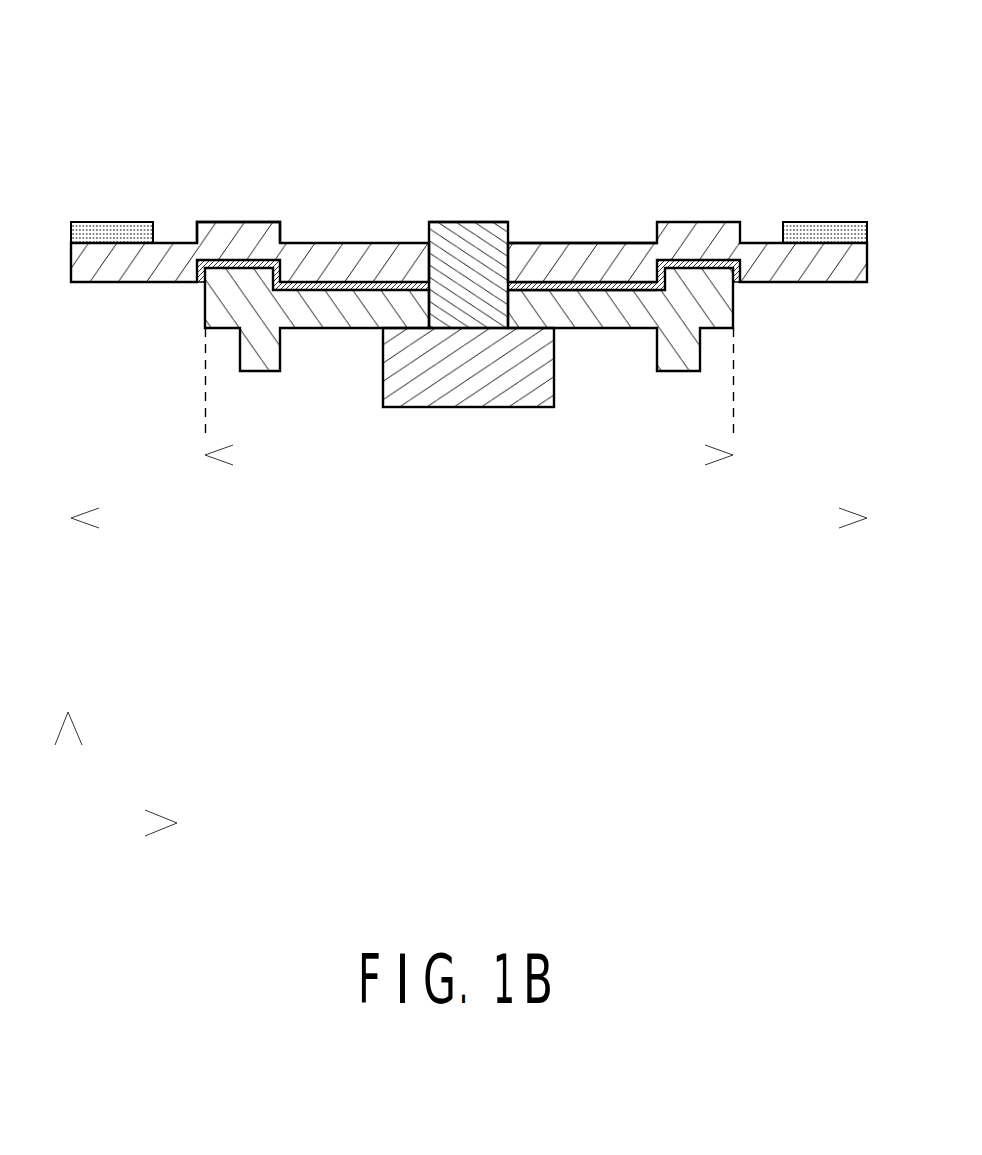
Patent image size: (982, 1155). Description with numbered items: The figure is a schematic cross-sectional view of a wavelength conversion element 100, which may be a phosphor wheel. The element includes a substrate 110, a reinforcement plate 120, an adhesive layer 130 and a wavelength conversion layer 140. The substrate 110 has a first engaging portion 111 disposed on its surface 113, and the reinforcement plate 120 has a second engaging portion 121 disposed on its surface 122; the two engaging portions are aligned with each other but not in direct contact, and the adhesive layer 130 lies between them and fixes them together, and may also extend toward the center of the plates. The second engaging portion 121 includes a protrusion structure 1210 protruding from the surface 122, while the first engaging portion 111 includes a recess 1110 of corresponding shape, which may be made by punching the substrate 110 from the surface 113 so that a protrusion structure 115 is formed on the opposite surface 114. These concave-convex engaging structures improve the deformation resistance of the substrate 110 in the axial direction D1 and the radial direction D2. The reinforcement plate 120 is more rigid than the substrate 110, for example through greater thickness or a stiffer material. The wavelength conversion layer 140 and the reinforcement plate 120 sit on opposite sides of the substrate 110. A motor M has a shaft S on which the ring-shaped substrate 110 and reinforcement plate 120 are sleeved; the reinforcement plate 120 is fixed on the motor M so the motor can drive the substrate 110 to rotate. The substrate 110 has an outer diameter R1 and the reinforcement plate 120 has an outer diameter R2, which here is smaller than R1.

The wavelength conversion element 100 is at (108, 28).
The substrate 110 is at (78, 266).
The first engaging portion 111 is at (468, 309).
The recess 1110 is at (205, 295).
The surface of the substrate 113 is at (636, 293).
The surface of the substrate 114 is at (603, 229).
The protrusion structure 115 is at (213, 228).
The reinforcement plate 120 is at (333, 307).
The second engaging portion 121 is at (495, 224).
The protrusion structure 1210 is at (247, 240).
The surface of the reinforcement plate 122 is at (610, 301).
The adhesive layer 130 is at (397, 250).
The wavelength conversion layer 140 is at (71, 233).
The shaft S is at (472, 235).
The motor M is at (543, 360).
The outer diameter of the substrate R1 is at (469, 530).
The outer diameter of the reinforcement plate R2 is at (469, 408).
The axial direction D1 is at (67, 713).
The radial direction D2 is at (179, 824).